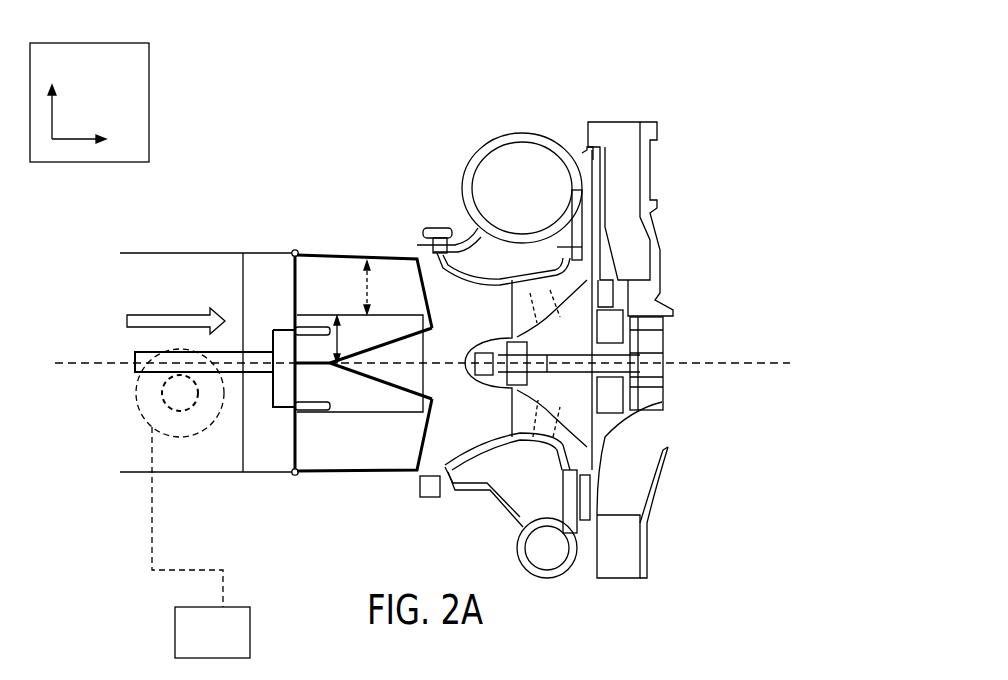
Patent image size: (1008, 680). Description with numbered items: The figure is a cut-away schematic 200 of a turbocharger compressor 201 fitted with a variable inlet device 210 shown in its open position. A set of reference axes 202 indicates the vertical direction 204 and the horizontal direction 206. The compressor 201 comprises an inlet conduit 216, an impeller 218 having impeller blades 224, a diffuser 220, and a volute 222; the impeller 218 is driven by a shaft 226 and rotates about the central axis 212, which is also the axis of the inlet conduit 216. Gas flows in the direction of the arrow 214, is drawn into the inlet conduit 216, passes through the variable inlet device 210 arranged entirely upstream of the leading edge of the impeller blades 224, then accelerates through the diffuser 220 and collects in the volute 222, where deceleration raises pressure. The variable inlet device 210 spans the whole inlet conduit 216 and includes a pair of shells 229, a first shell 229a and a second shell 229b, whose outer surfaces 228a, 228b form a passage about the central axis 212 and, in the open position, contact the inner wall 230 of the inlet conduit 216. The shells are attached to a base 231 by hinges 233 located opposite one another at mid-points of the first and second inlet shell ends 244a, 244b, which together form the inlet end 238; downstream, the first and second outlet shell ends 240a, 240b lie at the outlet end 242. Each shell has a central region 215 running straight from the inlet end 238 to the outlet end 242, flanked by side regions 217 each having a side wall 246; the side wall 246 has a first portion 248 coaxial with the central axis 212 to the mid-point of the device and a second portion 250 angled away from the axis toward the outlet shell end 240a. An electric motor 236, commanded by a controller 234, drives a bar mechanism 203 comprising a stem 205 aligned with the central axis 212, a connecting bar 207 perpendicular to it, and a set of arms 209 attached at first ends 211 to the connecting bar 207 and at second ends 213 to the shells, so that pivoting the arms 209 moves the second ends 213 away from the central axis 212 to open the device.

The schematic 200 is at (682, 82).
The compressor 201 is at (468, 130).
The reference axes 202 is at (105, 91).
The bar mechanism 203 is at (126, 352).
The vertical direction 204 is at (54, 108).
The stem 205 is at (240, 385).
The horizontal direction 206 is at (77, 137).
The connecting bar 207 is at (245, 445).
The arms 209 is at (280, 327).
The variable inlet device 210 is at (240, 161).
The first ends 211 is at (278, 330).
The central axis 212 is at (757, 360).
The second ends 213 is at (338, 320).
The arrow 214 is at (137, 313).
The central region 215 is at (373, 283).
The inlet conduit 216 is at (418, 253).
The side regions 217 is at (384, 341).
The impeller 218 is at (610, 439).
The diffuser 220 is at (627, 172).
The volute 222 is at (478, 152).
The impeller blades 224 is at (533, 312).
The shaft 226 is at (655, 370).
The outer surface of first shell 228a is at (324, 254).
The outer surface of second shell 228b is at (323, 477).
The pair of shells 229 is at (325, 190).
The first shell 229a is at (372, 255).
The second shell 229b is at (378, 475).
The inner wall 230 is at (170, 253).
The base 231 is at (253, 463).
The hinges 233 is at (297, 249).
The controller 234 is at (226, 643).
The electric motor 236 is at (139, 407).
The inlet end 238 is at (287, 281).
The first outlet shell end 240a is at (435, 282).
The second outlet shell end 240b is at (443, 497).
The outlet end 242 is at (434, 378).
The first inlet shell end 244a is at (300, 278).
The second inlet shell end 244b is at (300, 447).
The side wall 246 is at (402, 369).
The first portion 248 is at (310, 367).
The second portion 250 is at (397, 390).